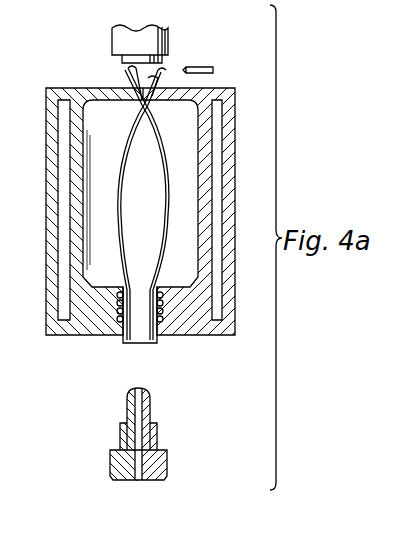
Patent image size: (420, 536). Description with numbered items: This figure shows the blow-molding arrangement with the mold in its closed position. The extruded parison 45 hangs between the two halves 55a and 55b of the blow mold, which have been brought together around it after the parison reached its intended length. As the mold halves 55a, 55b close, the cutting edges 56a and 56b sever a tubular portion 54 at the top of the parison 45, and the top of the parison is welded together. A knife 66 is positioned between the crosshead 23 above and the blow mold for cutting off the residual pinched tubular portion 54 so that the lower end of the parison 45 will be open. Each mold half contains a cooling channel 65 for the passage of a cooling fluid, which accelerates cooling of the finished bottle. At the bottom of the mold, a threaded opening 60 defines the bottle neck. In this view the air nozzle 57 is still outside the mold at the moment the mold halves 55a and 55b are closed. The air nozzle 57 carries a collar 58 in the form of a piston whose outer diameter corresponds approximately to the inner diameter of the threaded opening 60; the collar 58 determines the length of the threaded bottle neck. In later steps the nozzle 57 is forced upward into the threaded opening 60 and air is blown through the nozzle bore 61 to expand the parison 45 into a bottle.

The crosshead 23 is at (108, 44).
The tubular portion 54 is at (128, 77).
The knife 66 is at (200, 66).
The cutting edge 56a is at (136, 106).
The cutting edge 56b is at (150, 106).
The extruded parison 45 is at (167, 220).
The cooling channel 65 is at (218, 305).
The mold half 55a is at (88, 332).
The mold half 55b is at (200, 332).
The threaded opening 60 is at (117, 322).
The air nozzle 57 is at (148, 397).
The collar 58 is at (158, 440).
The nozzle bore 61 is at (130, 455).